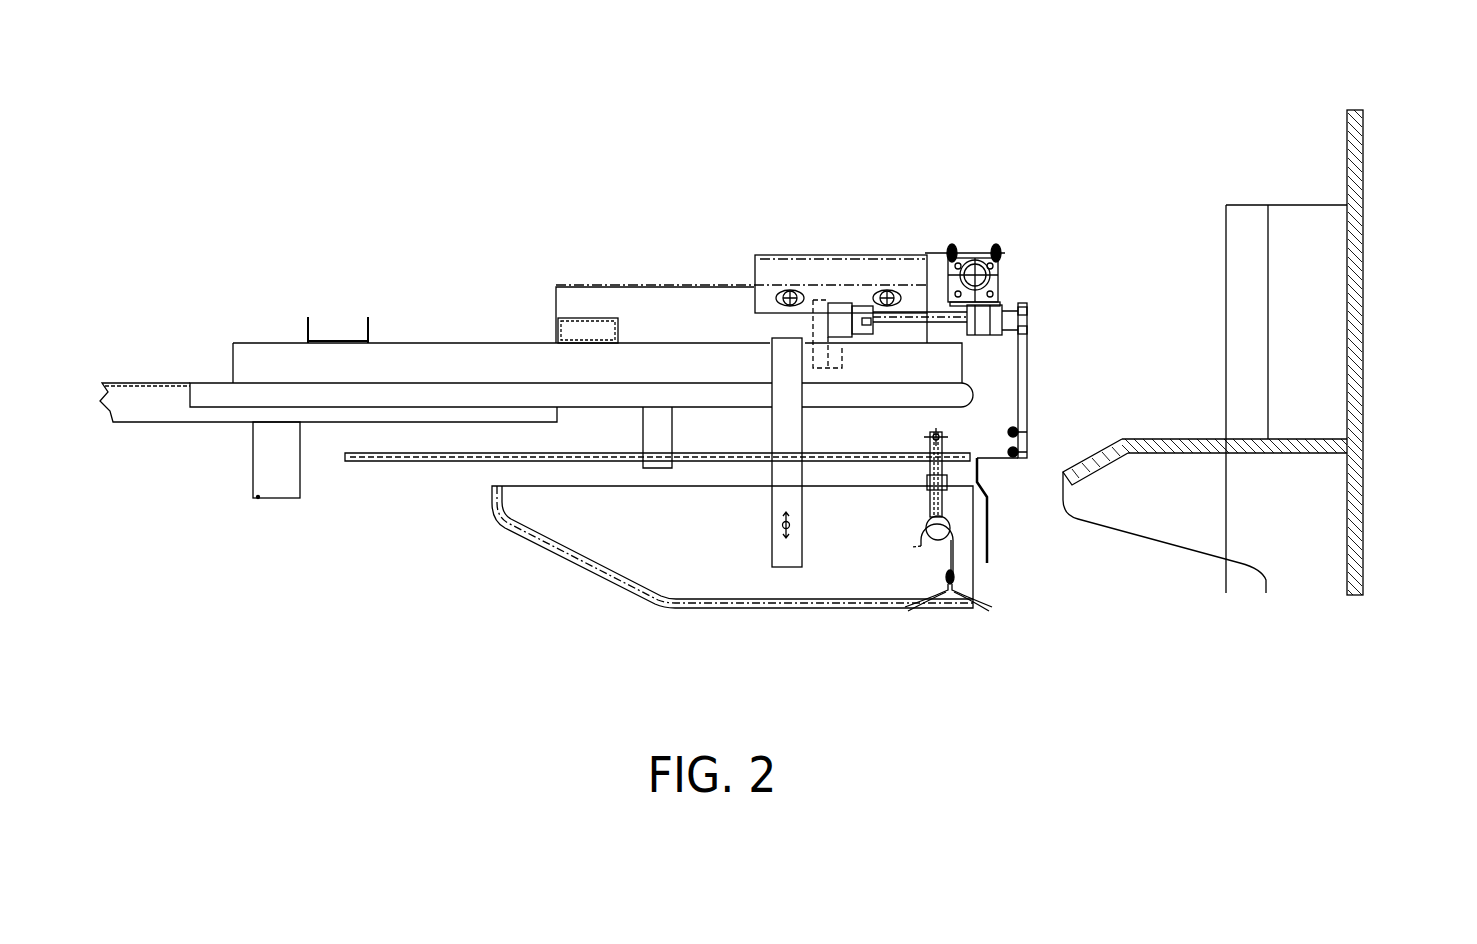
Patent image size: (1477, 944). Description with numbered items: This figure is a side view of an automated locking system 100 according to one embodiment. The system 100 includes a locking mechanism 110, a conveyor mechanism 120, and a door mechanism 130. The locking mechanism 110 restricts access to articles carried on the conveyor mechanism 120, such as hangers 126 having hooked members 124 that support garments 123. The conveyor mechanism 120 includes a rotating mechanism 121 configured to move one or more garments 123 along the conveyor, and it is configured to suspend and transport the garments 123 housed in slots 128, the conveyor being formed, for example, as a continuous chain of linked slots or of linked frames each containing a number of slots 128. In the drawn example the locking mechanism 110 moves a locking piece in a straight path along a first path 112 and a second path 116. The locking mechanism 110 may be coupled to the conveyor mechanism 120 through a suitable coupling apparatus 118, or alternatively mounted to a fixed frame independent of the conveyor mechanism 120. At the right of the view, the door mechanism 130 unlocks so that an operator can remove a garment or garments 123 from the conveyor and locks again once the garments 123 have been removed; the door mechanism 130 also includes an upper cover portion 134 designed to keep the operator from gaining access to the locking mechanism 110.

The system 100 is at (735, 148).
The locking mechanism 110 is at (842, 353).
The first path 112 is at (975, 257).
The second path 116 is at (953, 325).
The coupling apparatus 118 is at (932, 268).
The conveyor mechanism 120 is at (163, 395).
The rotating mechanism 121 is at (357, 458).
The garment 123 is at (946, 612).
The hooked member 124 is at (957, 542).
The hanger 126 is at (992, 603).
The slot 128 is at (930, 448).
The door mechanism 130 is at (1363, 225).
The upper cover portion 134 is at (1255, 455).